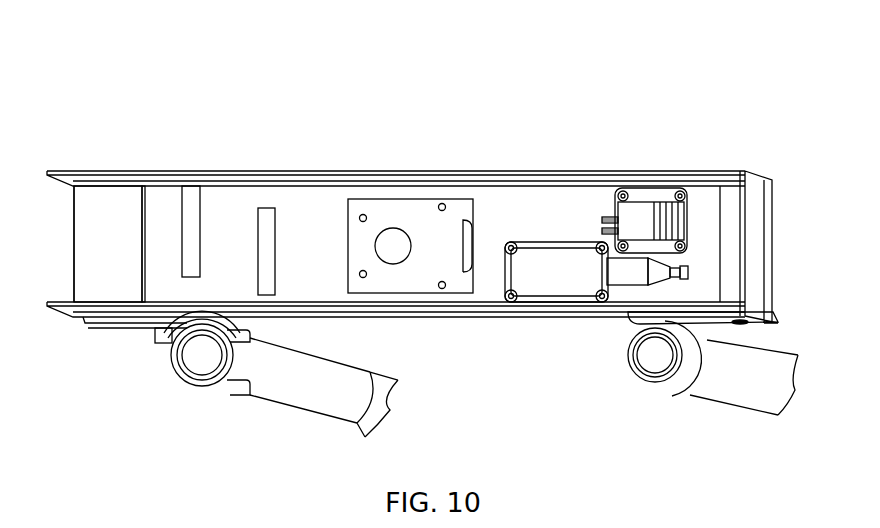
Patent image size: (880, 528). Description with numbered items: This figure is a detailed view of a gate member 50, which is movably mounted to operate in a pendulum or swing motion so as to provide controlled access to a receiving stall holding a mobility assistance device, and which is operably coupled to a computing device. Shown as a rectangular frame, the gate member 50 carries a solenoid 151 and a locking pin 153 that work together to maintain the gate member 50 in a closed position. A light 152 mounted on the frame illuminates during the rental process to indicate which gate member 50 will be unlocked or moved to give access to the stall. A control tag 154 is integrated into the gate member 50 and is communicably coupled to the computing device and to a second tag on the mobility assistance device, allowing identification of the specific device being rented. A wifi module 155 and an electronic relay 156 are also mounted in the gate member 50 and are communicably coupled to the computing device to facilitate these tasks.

The gate member 50 is at (483, 150).
The solenoid 151 is at (163, 223).
The light 152 is at (263, 223).
The locking pin 153 is at (155, 343).
The control tag 154 is at (418, 220).
The wifi module 155 is at (531, 272).
The electronic relay 156 is at (646, 222).